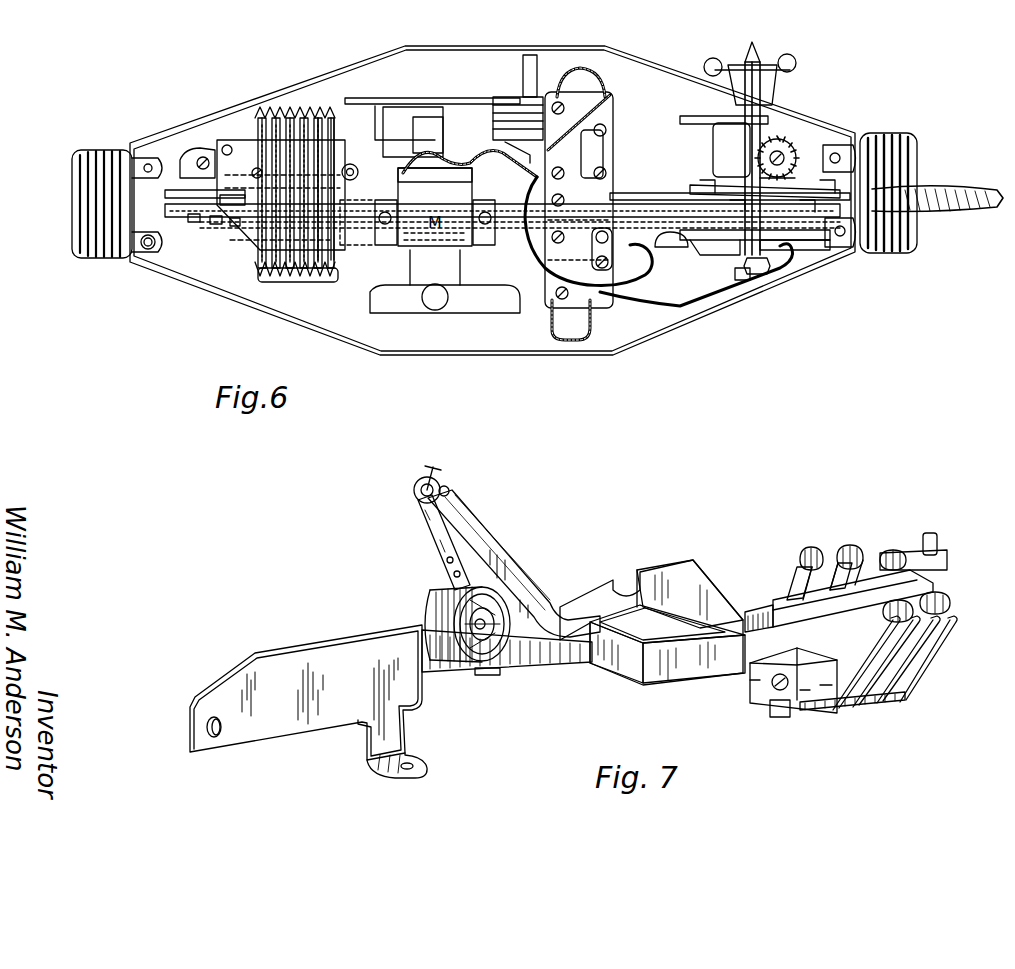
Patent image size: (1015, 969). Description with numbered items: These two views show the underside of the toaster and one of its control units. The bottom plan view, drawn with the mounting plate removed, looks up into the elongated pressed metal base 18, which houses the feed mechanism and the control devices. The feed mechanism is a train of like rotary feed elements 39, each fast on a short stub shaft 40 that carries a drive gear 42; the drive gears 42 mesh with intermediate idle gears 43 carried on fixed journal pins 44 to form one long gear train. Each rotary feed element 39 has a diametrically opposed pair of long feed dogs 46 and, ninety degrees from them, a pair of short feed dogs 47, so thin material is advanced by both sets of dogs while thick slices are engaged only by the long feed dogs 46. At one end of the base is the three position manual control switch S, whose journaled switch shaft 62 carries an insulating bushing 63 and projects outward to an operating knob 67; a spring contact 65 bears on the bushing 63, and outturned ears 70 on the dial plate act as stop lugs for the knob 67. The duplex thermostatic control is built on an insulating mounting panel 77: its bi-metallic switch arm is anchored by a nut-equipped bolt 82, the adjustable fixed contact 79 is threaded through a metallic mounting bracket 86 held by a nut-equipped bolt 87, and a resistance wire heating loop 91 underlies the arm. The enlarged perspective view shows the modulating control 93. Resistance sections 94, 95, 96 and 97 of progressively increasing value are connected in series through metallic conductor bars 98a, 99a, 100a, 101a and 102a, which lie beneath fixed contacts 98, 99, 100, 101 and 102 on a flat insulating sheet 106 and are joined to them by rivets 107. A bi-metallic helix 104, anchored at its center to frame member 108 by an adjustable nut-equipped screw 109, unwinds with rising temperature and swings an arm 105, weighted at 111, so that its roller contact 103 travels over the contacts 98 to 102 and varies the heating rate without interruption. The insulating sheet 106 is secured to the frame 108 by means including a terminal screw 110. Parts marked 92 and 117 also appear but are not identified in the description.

In FIG. 6, the base 18 is at (586, 355).
In FIG. 6, the rotary feed element 39 is at (200, 190).
In FIG. 6, the stub shaft 40 is at (196, 224).
In FIG. 6, the drive gear 42 is at (160, 238).
In FIG. 6, the idle gear 43 is at (216, 226).
In FIG. 6, the fixed journal pin 44 is at (236, 228).
In FIG. 6, the long feed dog 46 is at (166, 208).
In FIG. 6, the short feed dog 47 is at (236, 194).
In FIG. 6, the switch shaft 62 is at (775, 135).
In FIG. 6, the insulating bushing 63 is at (785, 179).
In FIG. 6, the spring contact 65 is at (661, 236).
In FIG. 6, the operating knob 67 is at (762, 62).
In FIG. 6, the outturned ears 70 is at (797, 66).
In FIG. 6, the mounting panel 77 is at (613, 112).
In FIG. 6, the fixed contact 79 is at (607, 173).
In FIG. 6, the nut-equipped bolt 82 is at (612, 262).
In FIG. 6, the metallic mounting bracket 86 is at (565, 168).
In FIG. 6, the nut-equipped bolt 87 is at (558, 114).
In FIG. 6, the resistance wire heating element 91 is at (605, 150).
In FIG. 6, the bracket 92 is at (713, 135).
In FIG. 7, the modulating control 93 is at (678, 552).
In FIG. 6, the resistance section 94 is at (312, 105).
In FIG. 7, the resistance section 94 is at (905, 600).
In FIG. 6, the resistance section 95 is at (331, 262).
In FIG. 7, the resistance section 95 is at (805, 550).
In FIG. 6, the resistance section 96 is at (285, 105).
In FIG. 7, the resistance section 96 is at (948, 598).
In FIG. 6, the resistance section 97 is at (290, 262).
In FIG. 7, the resistance section 97 is at (852, 546).
In FIG. 7, the fixed contact 98 is at (810, 695).
In FIG. 7, the fixed contact 99 is at (828, 698).
In FIG. 7, the fixed contact 100 is at (850, 700).
In FIG. 7, the fixed contact 101 is at (817, 586).
In FIG. 7, the fixed contact 102 is at (859, 582).
In FIG. 6, the metallic conductor bar 98a is at (336, 282).
In FIG. 7, the metallic conductor bar 98a is at (860, 712).
In FIG. 6, the metallic conductor bar 99a is at (305, 262).
In FIG. 7, the metallic conductor bar 99a is at (798, 598).
In FIG. 6, the metallic conductor bar 100a is at (318, 262).
In FIG. 7, the metallic conductor bar 100a is at (830, 590).
In FIG. 6, the metallic conductor bar 101a is at (276, 262).
In FIG. 7, the metallic conductor bar 101a is at (860, 575).
In FIG. 6, the metallic conductor bar 102a is at (262, 115).
In FIG. 7, the metallic conductor bar 102a is at (875, 560).
In FIG. 7, the roller contact 103 is at (758, 605).
In FIG. 6, the bi-metallic helix 104 is at (515, 98).
In FIG. 7, the bi-metallic helix 104 is at (455, 592).
In FIG. 6, the arm 105 is at (445, 110).
In FIG. 7, the arm 105 is at (500, 530).
In FIG. 6, the insulating sheet 106 is at (352, 163).
In FIG. 7, the insulating sheet 106 is at (752, 690).
In FIG. 6, the rivets 107 is at (257, 168).
In FIG. 6, the frame member 108 is at (726, 118).
In FIG. 7, the frame member 108 is at (585, 585).
In FIG. 6, the nut-equipped screw 109 is at (525, 152).
In FIG. 7, the nut-equipped screw 109 is at (480, 676).
In FIG. 6, the terminal screw 110 is at (203, 157).
In FIG. 6, the weight 111 is at (425, 115).
In FIG. 7, the weight 111 is at (652, 682).
In FIG. 7, the roller 117 is at (418, 500).
In FIG. 6, the control switch S is at (744, 288).